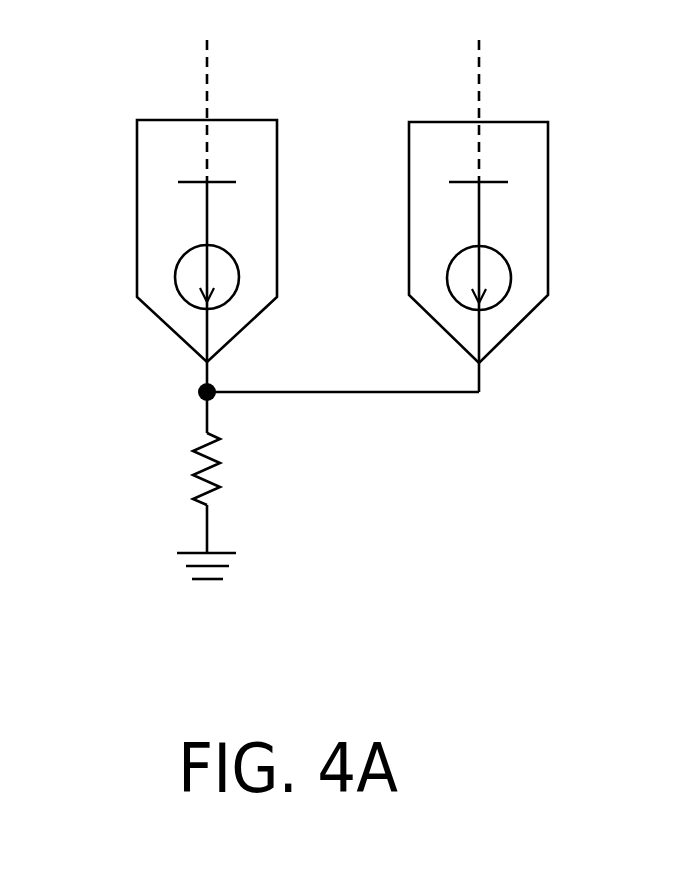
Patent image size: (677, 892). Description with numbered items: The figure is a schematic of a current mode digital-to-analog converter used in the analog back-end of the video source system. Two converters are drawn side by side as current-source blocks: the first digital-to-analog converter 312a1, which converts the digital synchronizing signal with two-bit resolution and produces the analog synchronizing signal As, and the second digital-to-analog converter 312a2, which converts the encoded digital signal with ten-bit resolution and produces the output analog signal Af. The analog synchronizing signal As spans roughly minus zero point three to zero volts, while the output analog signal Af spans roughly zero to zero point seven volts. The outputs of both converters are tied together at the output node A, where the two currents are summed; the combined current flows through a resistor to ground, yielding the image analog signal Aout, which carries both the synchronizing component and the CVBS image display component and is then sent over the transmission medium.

The first digital-to-analog converter 312a1 is at (277, 207).
The second digital-to-analog converter 312a2 is at (548, 208).
The analog synchronizing signal As is at (187, 253).
The output analog signal Af is at (457, 253).
The image analog signal Aout is at (175, 417).
The output node A is at (210, 395).